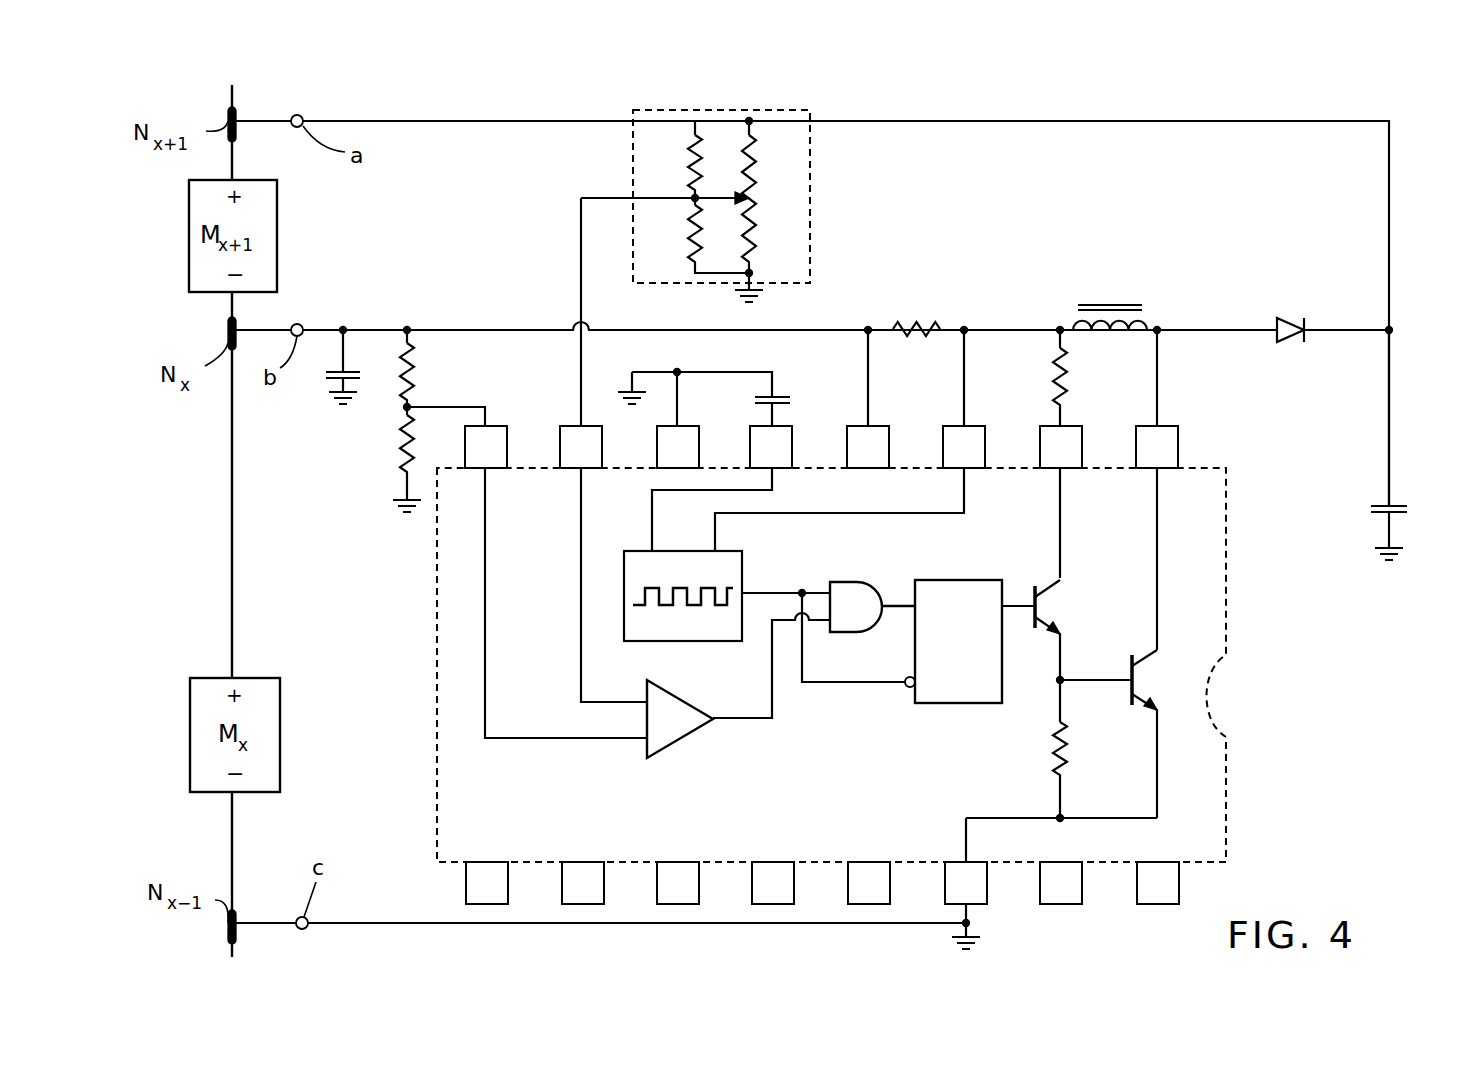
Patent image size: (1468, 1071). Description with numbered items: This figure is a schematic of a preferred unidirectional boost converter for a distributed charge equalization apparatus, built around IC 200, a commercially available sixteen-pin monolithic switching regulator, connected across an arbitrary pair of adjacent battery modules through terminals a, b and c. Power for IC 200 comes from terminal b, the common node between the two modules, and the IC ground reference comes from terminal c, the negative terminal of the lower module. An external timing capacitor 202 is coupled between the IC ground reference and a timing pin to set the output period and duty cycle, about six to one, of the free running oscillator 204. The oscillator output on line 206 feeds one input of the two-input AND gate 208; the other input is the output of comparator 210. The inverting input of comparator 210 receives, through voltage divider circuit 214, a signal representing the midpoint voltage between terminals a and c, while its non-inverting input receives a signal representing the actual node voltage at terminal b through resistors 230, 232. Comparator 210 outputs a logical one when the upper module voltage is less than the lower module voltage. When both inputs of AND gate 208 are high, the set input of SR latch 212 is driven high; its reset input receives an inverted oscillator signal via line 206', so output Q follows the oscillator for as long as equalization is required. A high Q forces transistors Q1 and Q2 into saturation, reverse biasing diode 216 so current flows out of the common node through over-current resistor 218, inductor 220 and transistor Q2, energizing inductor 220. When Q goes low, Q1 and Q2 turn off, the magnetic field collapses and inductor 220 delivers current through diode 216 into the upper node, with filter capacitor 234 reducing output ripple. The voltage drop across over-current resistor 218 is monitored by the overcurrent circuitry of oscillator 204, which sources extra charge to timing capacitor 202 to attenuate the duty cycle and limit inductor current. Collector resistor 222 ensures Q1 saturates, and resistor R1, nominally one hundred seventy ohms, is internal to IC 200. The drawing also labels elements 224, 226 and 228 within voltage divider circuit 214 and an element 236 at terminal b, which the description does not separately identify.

The IC 200 is at (1245, 625).
The external timing capacitor 202 is at (785, 388).
The free running oscillator 204 is at (660, 640).
The line 206 is at (798, 567).
The line 206' is at (809, 675).
The two input AND gate 208 is at (870, 582).
The comparator 210 is at (688, 730).
The SR latch 212 is at (962, 700).
The voltage divider circuit 214 is at (747, 218).
The diode 216 is at (1278, 326).
The over-current resistor 218 is at (925, 325).
The inductor 220 is at (1115, 305).
The collector resistor 222 is at (1055, 390).
The resistor 224 is at (690, 172).
The resistor 226 is at (690, 240).
The potentiometer resistor 228 is at (755, 162).
The resistor 230 is at (413, 385).
The resistor 232 is at (400, 440).
The filter capacitor 234 is at (1398, 505).
The capacitor 236 is at (330, 383).
The transistor Q1 is at (1045, 608).
The transistor Q2 is at (1140, 668).
The resistor R1 is at (1053, 765).